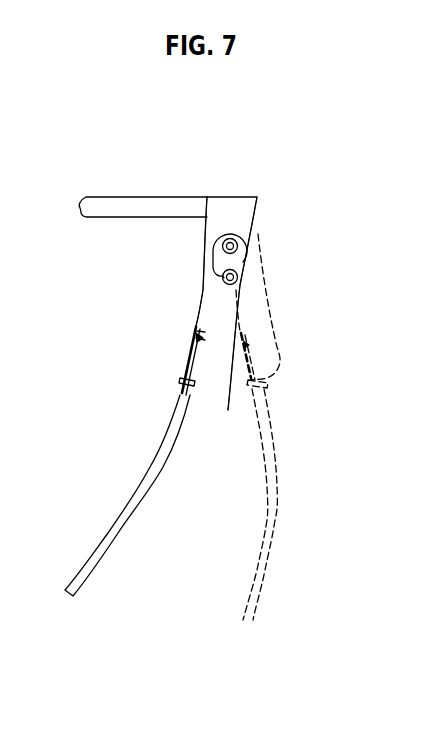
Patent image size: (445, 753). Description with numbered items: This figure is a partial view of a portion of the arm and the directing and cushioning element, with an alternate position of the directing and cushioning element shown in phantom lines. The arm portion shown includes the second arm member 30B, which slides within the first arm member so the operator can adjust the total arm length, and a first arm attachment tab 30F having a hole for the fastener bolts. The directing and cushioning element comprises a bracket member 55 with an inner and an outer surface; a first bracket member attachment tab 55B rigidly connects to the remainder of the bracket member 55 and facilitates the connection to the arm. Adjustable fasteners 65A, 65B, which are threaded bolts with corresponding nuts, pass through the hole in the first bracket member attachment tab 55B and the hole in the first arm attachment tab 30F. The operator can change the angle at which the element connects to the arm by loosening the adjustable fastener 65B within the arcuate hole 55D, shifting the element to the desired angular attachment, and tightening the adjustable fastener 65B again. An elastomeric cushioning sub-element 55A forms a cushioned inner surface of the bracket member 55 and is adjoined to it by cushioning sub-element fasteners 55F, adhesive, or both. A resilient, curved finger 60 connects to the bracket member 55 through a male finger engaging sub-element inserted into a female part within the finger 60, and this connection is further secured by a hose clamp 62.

The second arm member 30B is at (133, 205).
The first arm attachment tab 30F is at (230, 208).
The adjustable fastener 65A is at (246, 238).
The adjustable fastener 65B is at (246, 273).
The arcuate hole 55D is at (214, 277).
The bracket member 55 is at (193, 325).
The first bracket member attachment tab 55B is at (223, 305).
The elastomeric cushioning sub-element 55A is at (180, 388).
The cushioning sub-element fastener 55F is at (198, 341).
The hose clamp 62 is at (193, 388).
The finger 60 is at (134, 513).